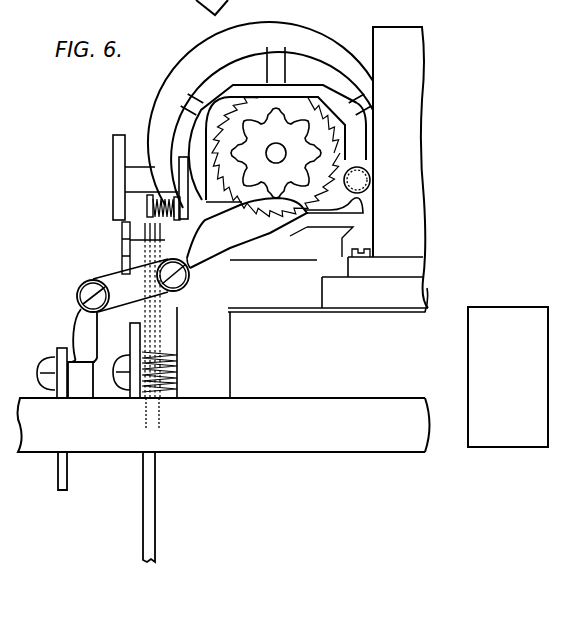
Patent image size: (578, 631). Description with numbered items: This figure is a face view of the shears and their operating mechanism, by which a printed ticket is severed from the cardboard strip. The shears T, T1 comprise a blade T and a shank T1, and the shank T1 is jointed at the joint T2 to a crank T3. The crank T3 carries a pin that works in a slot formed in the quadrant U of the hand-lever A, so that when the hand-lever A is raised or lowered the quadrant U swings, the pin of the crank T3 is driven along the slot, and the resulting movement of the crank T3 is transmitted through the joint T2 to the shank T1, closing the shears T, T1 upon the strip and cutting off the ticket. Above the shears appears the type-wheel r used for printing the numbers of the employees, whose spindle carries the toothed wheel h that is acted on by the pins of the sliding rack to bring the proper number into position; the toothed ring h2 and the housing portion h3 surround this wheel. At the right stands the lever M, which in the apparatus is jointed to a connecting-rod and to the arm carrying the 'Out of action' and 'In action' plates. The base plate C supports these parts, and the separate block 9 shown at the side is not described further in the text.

The type-wheel r is at (260, 115).
The toothed wheel h is at (276, 153).
The ratchet toothed ring h2 is at (276, 157).
The gear housing and roller stop h3 is at (350, 140).
The lever M is at (328, 169).
The shears T is at (247, 233).
The shank of the shears T1 is at (123, 292).
The joint T2 is at (89, 288).
The crank T3 is at (67, 353).
The base plate C is at (224, 425).
The quadrant U is at (73, 471).
The hand-lever A is at (158, 507).
The card / block 9 is at (508, 377).